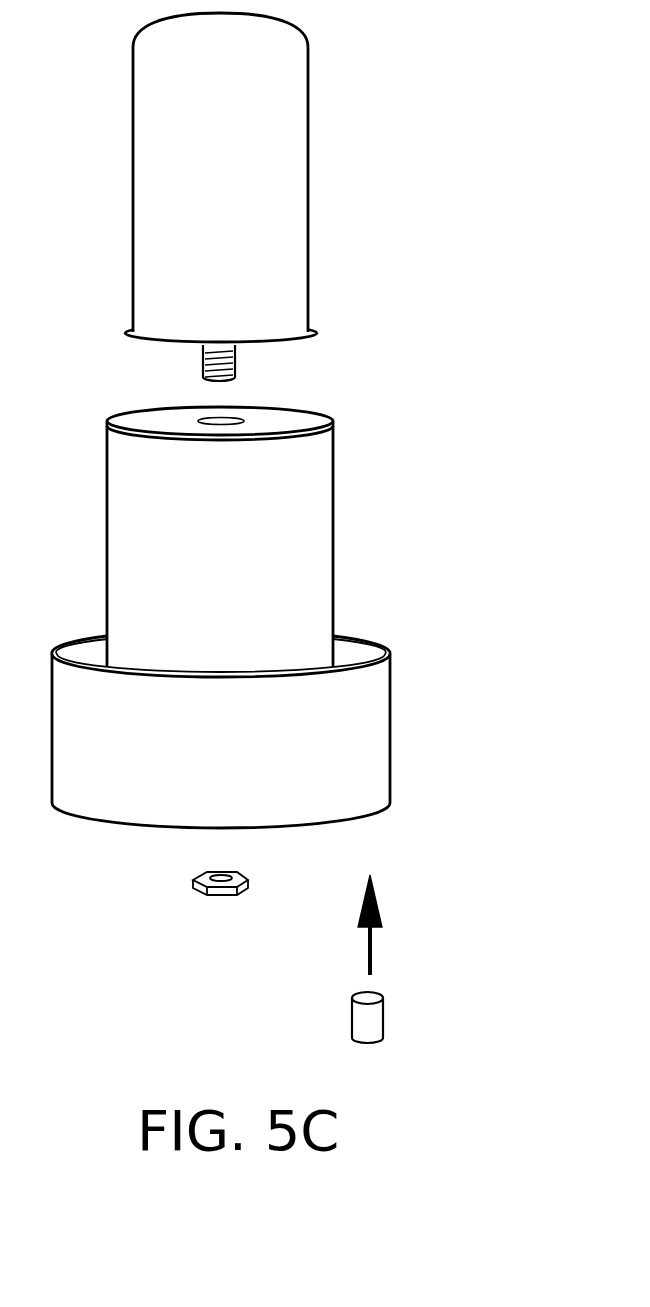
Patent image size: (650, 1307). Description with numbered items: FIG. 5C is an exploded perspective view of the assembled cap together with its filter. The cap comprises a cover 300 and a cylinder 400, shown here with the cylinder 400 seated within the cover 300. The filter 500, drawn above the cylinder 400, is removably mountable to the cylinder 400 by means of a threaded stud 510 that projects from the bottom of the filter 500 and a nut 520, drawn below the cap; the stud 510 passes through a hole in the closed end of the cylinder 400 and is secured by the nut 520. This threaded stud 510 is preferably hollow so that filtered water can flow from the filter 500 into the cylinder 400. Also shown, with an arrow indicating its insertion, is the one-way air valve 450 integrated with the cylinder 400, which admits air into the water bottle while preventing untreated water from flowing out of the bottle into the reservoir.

The filter 500 is at (308, 233).
The threaded stud 510 is at (238, 372).
The cylinder 400 is at (335, 568).
The cover 300 is at (390, 693).
The nut 520 is at (222, 896).
The one-way air valve 450 is at (383, 1023).